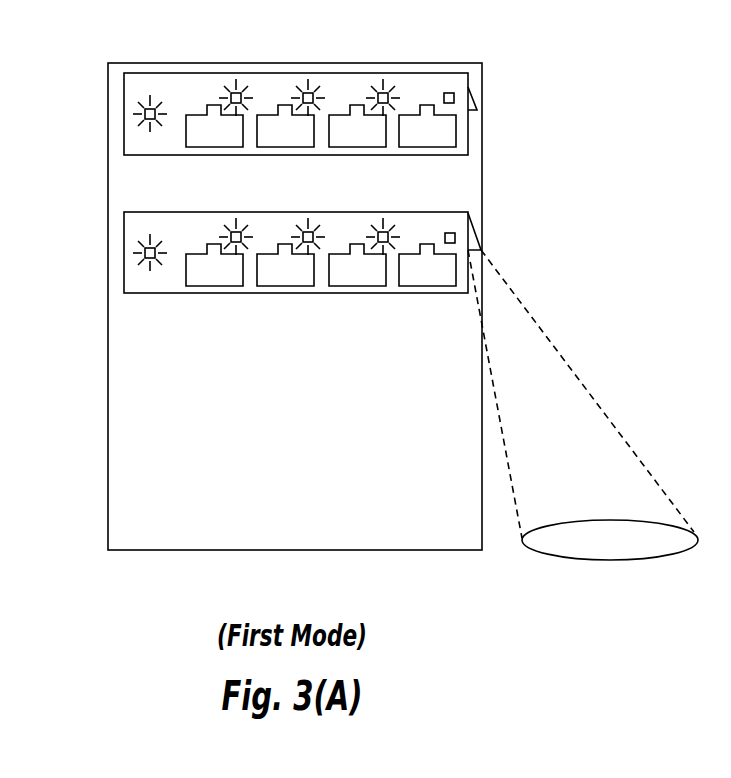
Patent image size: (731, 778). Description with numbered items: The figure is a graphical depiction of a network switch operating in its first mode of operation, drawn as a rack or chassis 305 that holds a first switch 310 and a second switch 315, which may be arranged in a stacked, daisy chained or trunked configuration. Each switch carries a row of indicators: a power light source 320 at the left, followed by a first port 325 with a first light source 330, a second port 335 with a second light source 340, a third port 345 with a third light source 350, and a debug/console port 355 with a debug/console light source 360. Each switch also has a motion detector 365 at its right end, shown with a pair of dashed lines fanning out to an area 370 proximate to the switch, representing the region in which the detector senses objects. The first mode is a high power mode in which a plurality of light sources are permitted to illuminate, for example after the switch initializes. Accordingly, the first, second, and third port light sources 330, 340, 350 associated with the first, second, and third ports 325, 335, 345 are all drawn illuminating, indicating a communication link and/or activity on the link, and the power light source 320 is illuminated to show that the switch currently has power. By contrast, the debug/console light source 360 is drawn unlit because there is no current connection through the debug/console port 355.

The display panel 305 is at (108, 532).
The first switch 310 is at (123, 293).
The second switch 315 is at (123, 72).
The power light source 320 is at (141, 249).
The first port 325 is at (210, 285).
The first light source 330 is at (230, 221).
The second port 335 is at (282, 285).
The second light source 340 is at (301, 221).
The third port 345 is at (352, 285).
The third light source 350 is at (377, 221).
The debug/console port 355 is at (414, 285).
The debug/console light source 360 is at (448, 232).
The motion detector 365 is at (475, 237).
The area 370 is at (533, 547).